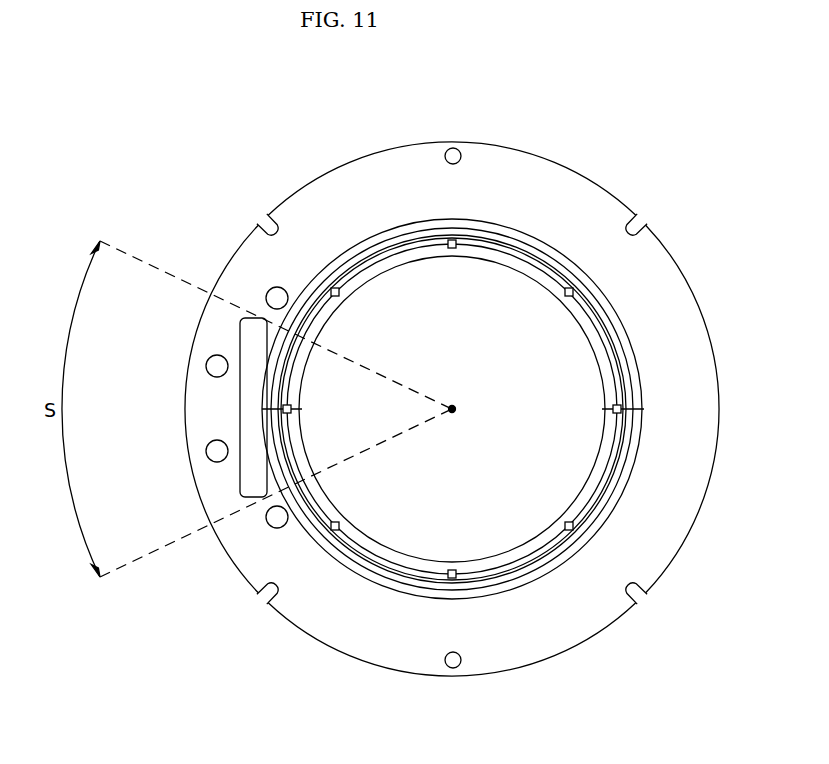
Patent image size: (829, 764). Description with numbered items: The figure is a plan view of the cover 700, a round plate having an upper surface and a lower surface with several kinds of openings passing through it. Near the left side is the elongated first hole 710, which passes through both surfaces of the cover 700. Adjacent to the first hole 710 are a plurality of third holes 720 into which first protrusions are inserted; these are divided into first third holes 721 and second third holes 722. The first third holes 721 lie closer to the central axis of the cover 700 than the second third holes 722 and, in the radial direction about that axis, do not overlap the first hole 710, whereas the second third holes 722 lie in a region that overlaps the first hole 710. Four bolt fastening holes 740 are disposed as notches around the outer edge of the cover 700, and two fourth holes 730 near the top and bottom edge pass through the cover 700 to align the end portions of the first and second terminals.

The cover 700 is at (194, 83).
The first hole 710 is at (240, 409).
The third holes 720 is at (193, 406).
The first third holes 721 is at (277, 298).
The second third holes 722 is at (217, 366).
The fourth holes 730 is at (458, 157).
The bolt fastening holes 740 is at (275, 220).